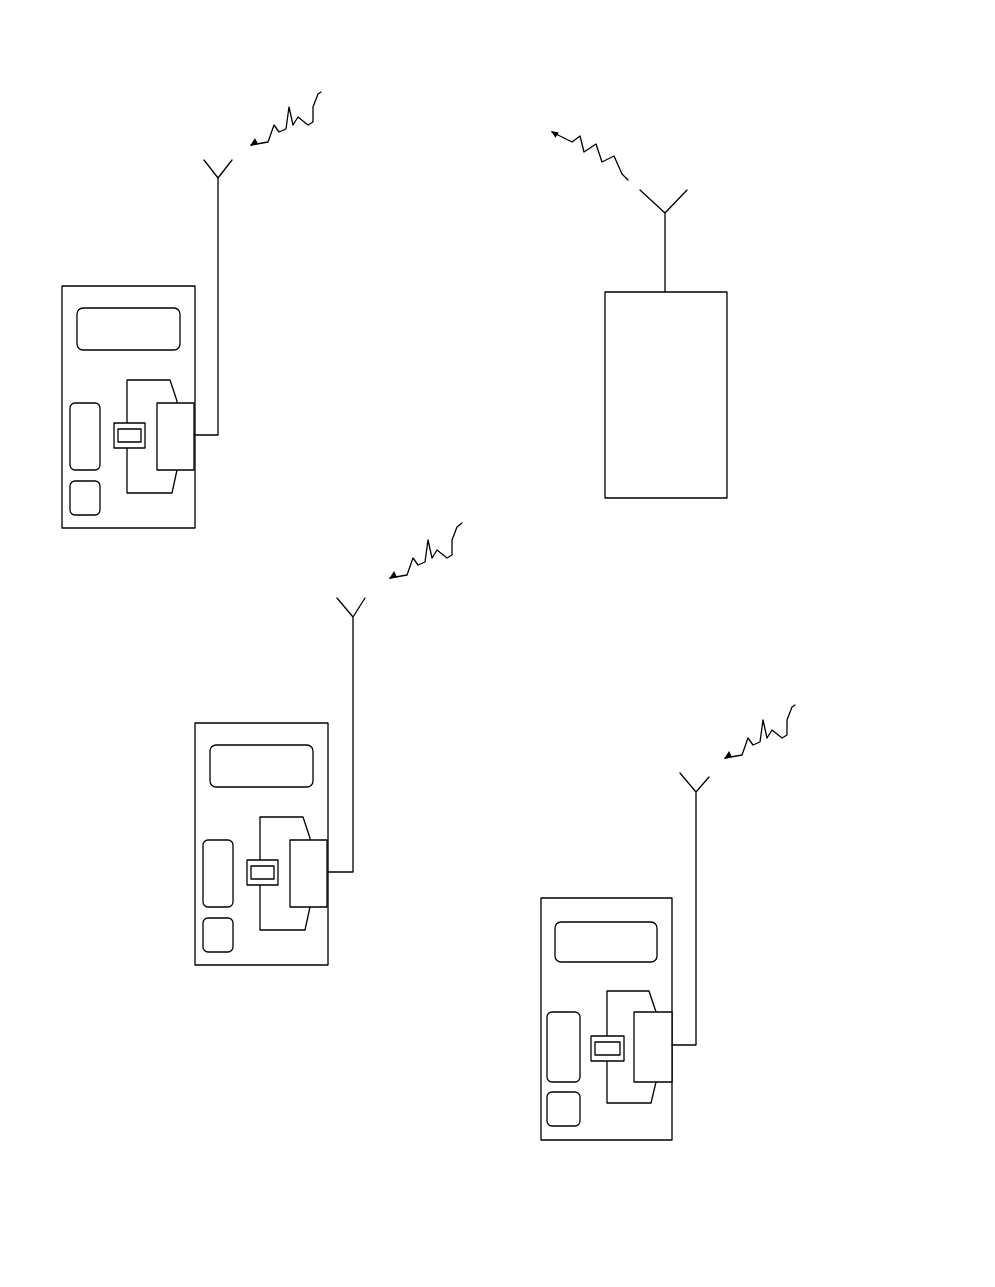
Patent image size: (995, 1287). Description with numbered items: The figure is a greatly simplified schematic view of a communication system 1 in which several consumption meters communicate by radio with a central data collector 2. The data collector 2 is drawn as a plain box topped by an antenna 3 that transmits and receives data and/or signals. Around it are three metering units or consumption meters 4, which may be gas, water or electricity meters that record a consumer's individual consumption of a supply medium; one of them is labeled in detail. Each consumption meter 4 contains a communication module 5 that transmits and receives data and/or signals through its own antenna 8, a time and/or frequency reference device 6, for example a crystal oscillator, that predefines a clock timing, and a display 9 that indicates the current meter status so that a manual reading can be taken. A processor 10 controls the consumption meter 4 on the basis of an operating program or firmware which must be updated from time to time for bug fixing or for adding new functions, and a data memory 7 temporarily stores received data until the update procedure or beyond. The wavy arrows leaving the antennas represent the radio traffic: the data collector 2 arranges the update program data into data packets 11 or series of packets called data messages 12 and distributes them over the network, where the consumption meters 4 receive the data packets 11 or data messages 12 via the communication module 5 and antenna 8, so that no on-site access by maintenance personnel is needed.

The communication system 1 is at (445, 52).
The data collector 2 is at (585, 343).
The antenna 3 is at (667, 238).
The consumption meter 4 is at (167, 795).
The communication module 5 is at (354, 907).
The time and/or frequency reference device 6 is at (255, 971).
The data memory 7 is at (165, 914).
The antenna 8 is at (388, 735).
The display 9 is at (252, 700).
The processor 10 is at (190, 998).
The data packets 11 is at (553, 173).
The data messages 12 is at (477, 551).